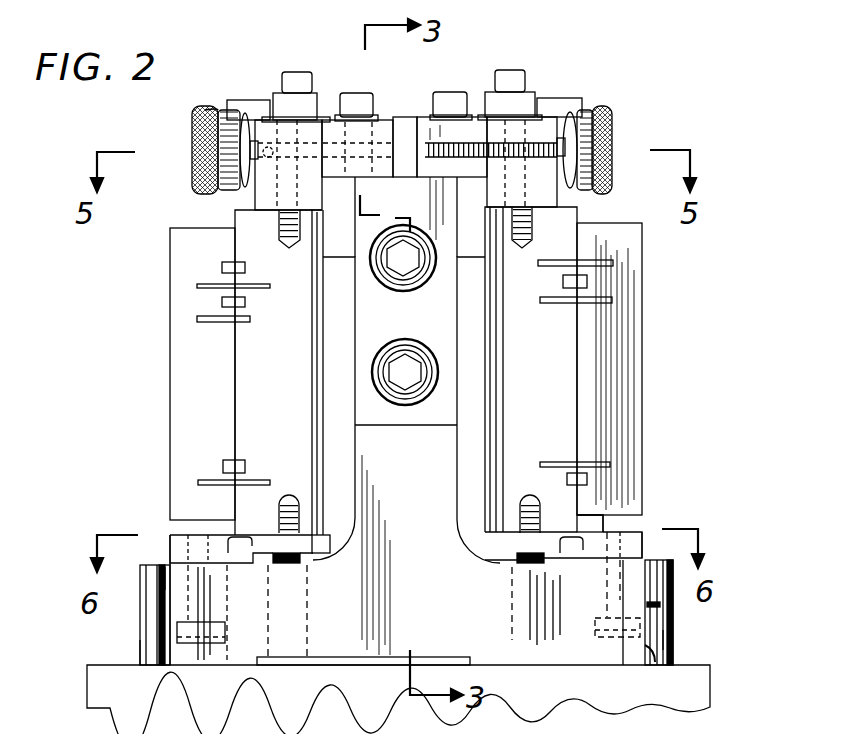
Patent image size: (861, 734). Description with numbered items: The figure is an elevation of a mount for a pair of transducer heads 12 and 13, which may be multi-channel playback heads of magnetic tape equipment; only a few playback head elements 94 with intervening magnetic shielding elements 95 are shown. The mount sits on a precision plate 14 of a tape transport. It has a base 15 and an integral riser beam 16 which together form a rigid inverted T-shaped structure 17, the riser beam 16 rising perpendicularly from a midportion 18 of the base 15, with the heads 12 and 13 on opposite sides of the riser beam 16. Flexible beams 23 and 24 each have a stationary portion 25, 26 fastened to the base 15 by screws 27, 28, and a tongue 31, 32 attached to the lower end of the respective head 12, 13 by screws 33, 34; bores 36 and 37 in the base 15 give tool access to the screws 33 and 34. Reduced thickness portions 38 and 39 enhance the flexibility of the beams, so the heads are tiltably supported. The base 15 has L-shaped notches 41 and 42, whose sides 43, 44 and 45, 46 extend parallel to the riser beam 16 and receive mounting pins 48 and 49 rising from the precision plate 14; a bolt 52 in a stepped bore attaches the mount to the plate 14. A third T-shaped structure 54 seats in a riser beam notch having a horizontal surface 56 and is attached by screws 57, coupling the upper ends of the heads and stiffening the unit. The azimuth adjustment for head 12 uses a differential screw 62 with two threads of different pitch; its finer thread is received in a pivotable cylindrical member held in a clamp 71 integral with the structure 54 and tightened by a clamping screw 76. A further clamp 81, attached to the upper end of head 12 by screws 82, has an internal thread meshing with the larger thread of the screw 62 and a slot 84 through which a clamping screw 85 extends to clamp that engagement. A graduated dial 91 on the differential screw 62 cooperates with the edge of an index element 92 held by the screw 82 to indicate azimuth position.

The transducer head 12 is at (160, 360).
The transducer head 13 is at (652, 355).
The precision plate 14 is at (713, 673).
The base 15 is at (252, 622).
The riser beam 16 is at (457, 440).
The inverted T-shaped structure 17 is at (445, 465).
The midportion of the base 18 is at (424, 556).
The flexible beam 23 is at (163, 533).
The flexible beam 24 is at (655, 522).
The stationary portion 25 is at (217, 535).
The stationary portion 26 is at (603, 528).
The screws 27 is at (226, 628).
The screws 28 is at (606, 590).
The tongue 31 is at (328, 535).
The tongue 32 is at (487, 537).
The screws 33 is at (302, 560).
The screws 34 is at (510, 560).
The bore 36 is at (307, 623).
The bore 37 is at (511, 606).
The reduced thickness portion 38 is at (238, 537).
The reduced thickness portion 39 is at (572, 535).
The L-shaped notch 41 is at (150, 584).
The L-shaped notch 42 is at (662, 606).
The side of notch 43 is at (159, 665).
The side of notch 44 is at (166, 570).
The side of notch 45 is at (652, 662).
The side of notch 46 is at (665, 530).
The mounting pin 48 is at (140, 640).
The mounting pin 49 is at (673, 640).
The bolt 52 is at (403, 666).
The third T-shaped structure 54 is at (462, 240).
The horizontal surface 56 is at (372, 424).
The screws 57 is at (405, 291).
The differential screw 62 is at (182, 122).
The clamp 71 is at (353, 170).
The clamping screw 76 is at (371, 97).
The further clamp 81 is at (272, 160).
The screws 82 is at (309, 72).
The slot 84 is at (248, 170).
The clamping screw 85 is at (283, 95).
The dial 91 is at (221, 105).
The index element 92 is at (258, 100).
The playback head elements 94 is at (222, 268).
The magnetic shielding elements 95 is at (197, 289).